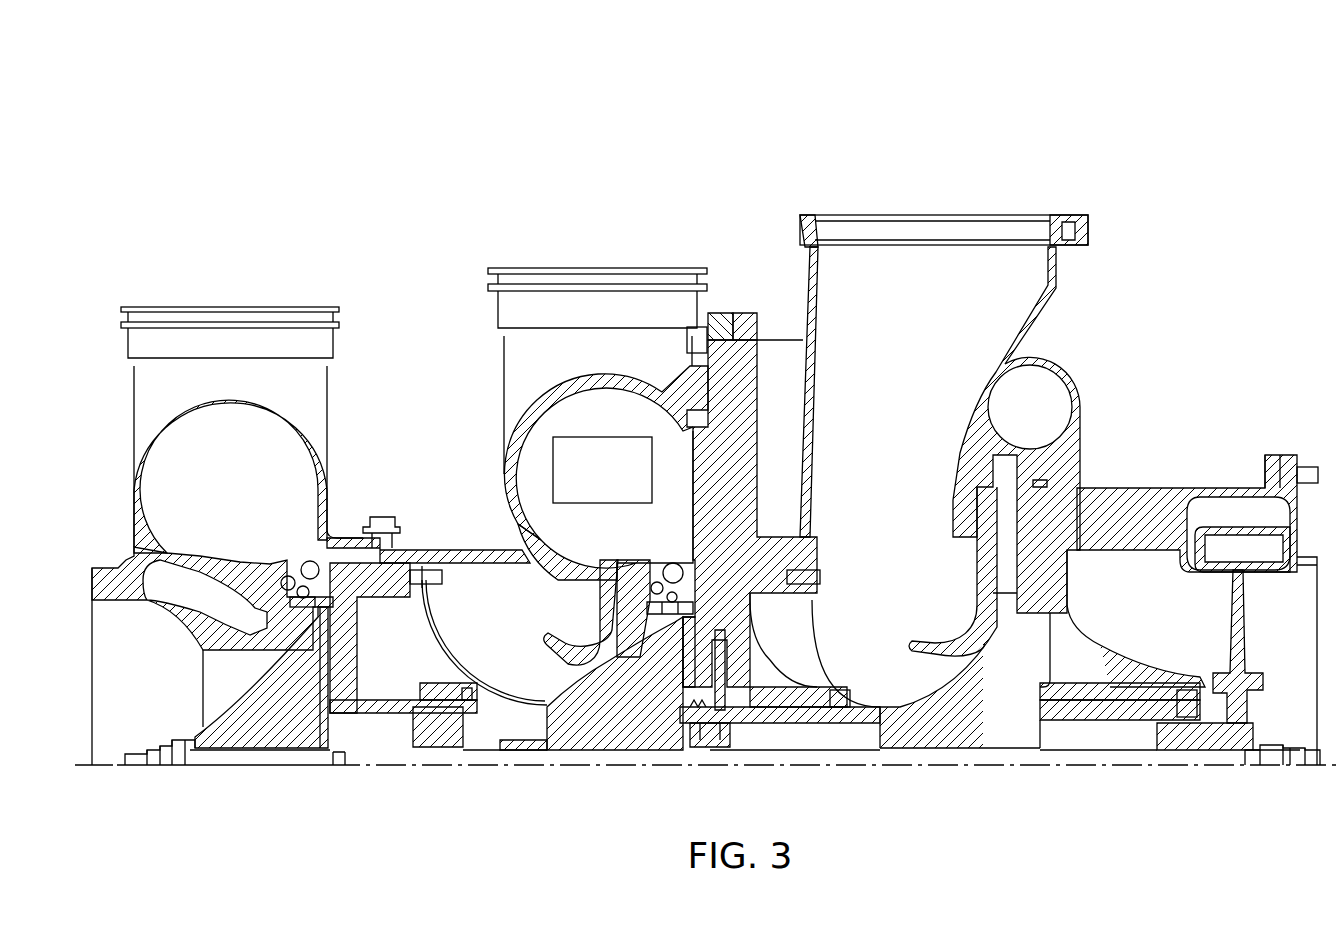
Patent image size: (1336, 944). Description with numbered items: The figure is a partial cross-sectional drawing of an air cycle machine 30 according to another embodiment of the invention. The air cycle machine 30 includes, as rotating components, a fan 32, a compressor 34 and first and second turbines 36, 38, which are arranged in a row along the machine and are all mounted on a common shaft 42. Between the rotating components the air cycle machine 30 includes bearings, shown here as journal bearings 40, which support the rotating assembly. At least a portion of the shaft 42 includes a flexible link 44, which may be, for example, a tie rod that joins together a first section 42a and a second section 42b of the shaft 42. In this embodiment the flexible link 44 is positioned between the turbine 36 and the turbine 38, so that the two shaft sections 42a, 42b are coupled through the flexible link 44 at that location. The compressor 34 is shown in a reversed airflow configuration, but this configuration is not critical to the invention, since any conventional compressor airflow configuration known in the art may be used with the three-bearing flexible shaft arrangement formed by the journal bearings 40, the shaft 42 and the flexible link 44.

The air cycle machine 30 is at (341, 162).
The fan 32 is at (1222, 748).
The compressor 34 is at (992, 748).
The first turbine 36 is at (272, 766).
The second turbine 38 is at (630, 740).
The journal bearings 40 is at (390, 707).
The shaft 42 is at (191, 781).
The first section 42a is at (334, 756).
The second section 42b is at (758, 760).
The flexible link 44 is at (505, 740).